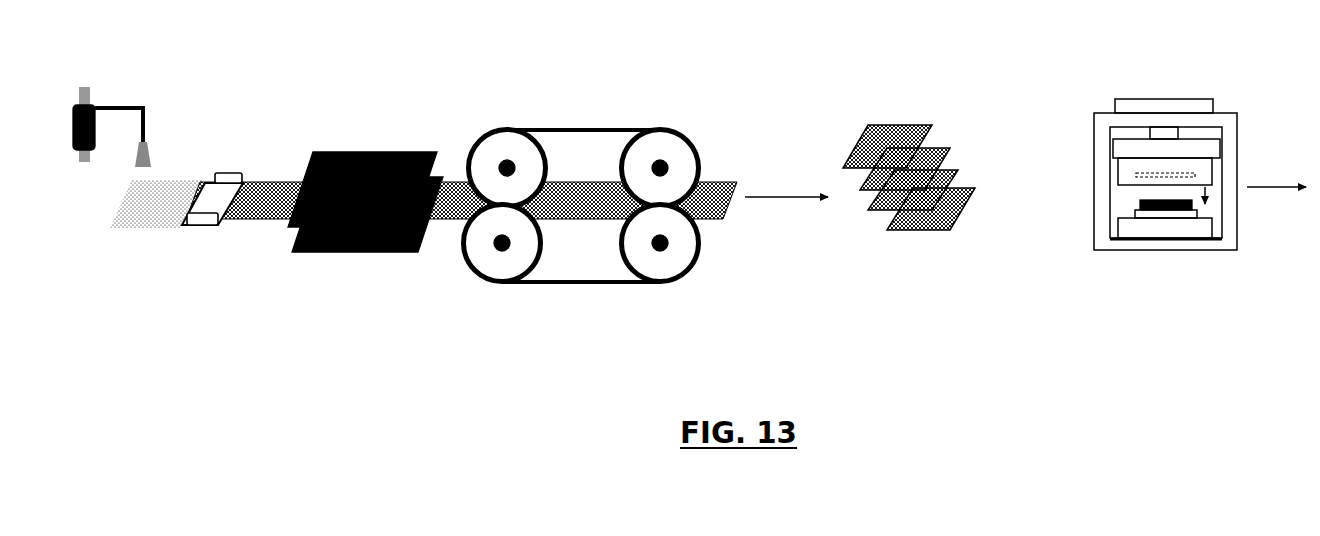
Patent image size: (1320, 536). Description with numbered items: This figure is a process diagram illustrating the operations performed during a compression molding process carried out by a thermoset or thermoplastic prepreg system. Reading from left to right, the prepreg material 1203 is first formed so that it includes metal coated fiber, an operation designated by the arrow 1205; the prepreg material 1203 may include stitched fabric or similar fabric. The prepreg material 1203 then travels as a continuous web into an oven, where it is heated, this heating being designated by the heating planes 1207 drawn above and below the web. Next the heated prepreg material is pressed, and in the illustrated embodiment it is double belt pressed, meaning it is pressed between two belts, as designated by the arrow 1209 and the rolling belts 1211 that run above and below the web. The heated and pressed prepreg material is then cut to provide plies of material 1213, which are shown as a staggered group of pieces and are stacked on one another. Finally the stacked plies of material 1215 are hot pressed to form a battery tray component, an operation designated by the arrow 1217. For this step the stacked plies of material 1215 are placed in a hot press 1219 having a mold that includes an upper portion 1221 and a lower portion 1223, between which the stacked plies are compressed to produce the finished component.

The prepreg material 1203 is at (173, 187).
The arrow 1205 is at (146, 58).
The heating planes 1207 is at (385, 151).
The arrow 1209 is at (602, 206).
The rolling belts 1211 is at (673, 132).
The plies of material 1213 is at (932, 126).
The stacked plies of material 1215 is at (1140, 205).
The arrow 1217 is at (1171, 172).
The hot press 1219 is at (1232, 117).
The upper portion 1221 is at (1120, 184).
The lower portion 1223 is at (1125, 232).